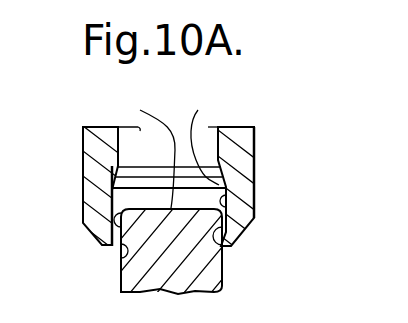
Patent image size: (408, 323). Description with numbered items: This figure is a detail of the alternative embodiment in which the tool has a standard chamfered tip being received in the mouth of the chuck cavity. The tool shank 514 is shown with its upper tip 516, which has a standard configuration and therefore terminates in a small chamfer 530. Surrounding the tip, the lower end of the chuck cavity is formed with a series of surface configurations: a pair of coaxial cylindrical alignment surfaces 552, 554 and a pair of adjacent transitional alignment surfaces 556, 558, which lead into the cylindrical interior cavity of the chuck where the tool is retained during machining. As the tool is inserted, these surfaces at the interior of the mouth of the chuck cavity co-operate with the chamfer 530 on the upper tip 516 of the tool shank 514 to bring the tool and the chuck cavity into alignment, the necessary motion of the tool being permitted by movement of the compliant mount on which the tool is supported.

The tool shank 514 is at (131, 279).
The upper tip 516 is at (140, 110).
The chamfer 530 is at (112, 208).
The cylindrical alignment surface 552 is at (238, 189).
The cylindrical alignment surface 554 is at (125, 256).
The transitional alignment surface 556 is at (205, 240).
The transitional alignment surface 558 is at (198, 110).